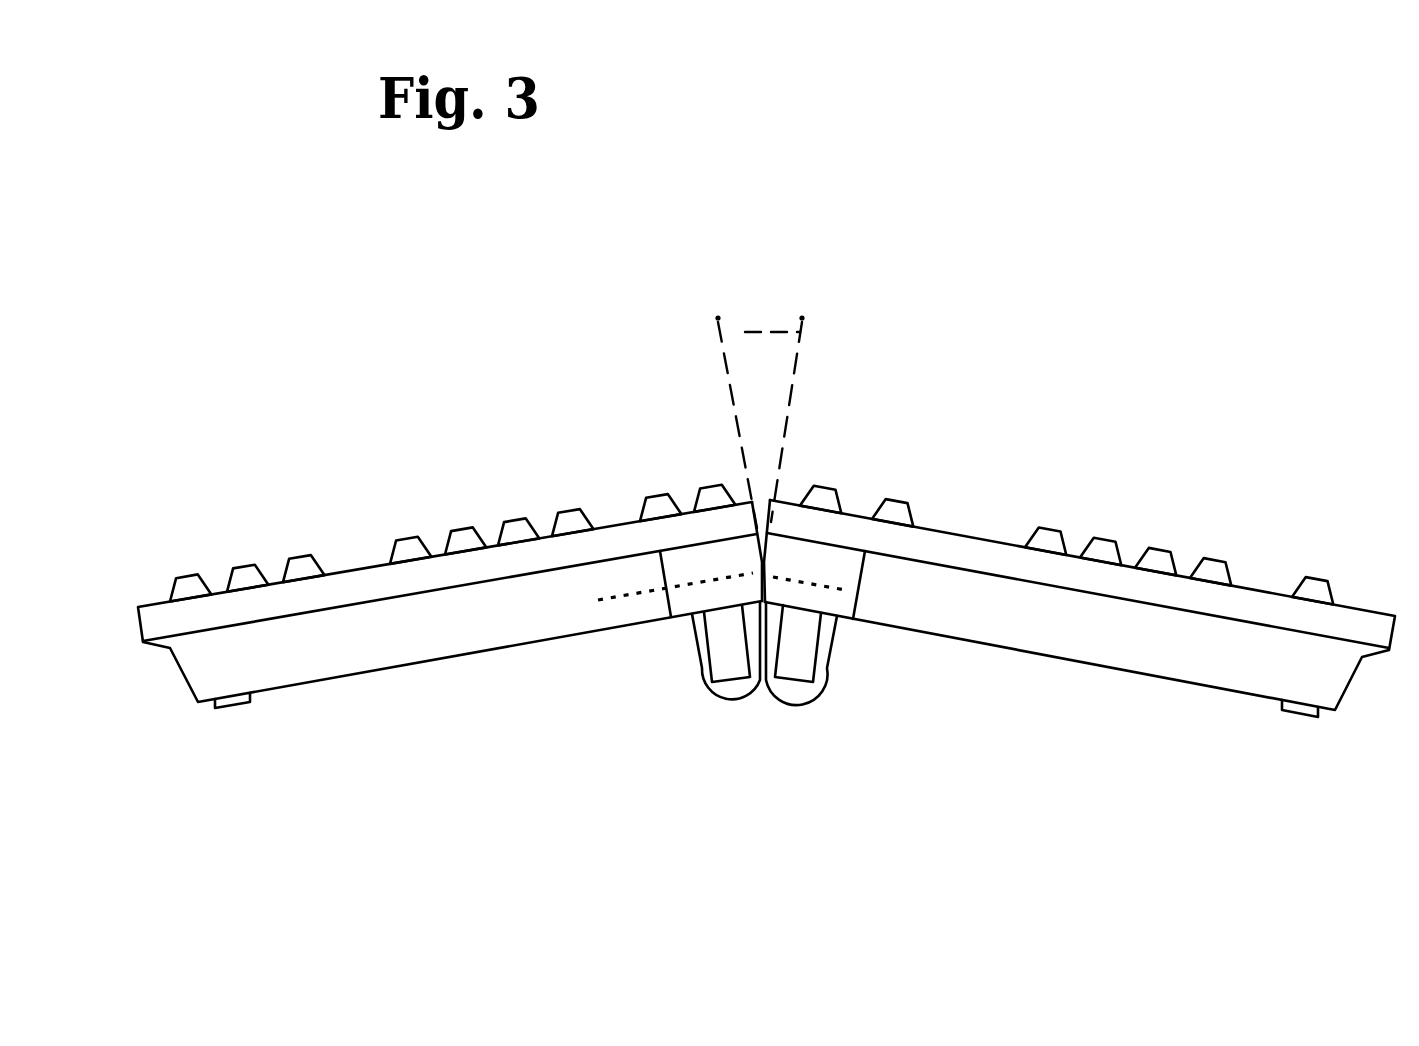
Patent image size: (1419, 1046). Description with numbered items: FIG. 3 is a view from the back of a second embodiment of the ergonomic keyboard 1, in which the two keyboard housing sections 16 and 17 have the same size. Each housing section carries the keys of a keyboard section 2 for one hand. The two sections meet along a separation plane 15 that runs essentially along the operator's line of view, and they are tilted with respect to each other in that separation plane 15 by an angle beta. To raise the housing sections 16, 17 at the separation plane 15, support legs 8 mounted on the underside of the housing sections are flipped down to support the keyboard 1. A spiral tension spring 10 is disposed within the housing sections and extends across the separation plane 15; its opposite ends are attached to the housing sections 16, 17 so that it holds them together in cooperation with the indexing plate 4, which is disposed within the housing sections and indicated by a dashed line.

The keyboard 1 is at (1022, 208).
The keyboard section 2 is at (895, 503).
The indexing plate 4 is at (627, 603).
The support legs 8 is at (800, 697).
The spiral tension spring 10 is at (762, 532).
The separation plane 15 is at (760, 572).
The housing section 16 is at (1242, 600).
The housing section 17 is at (368, 617).